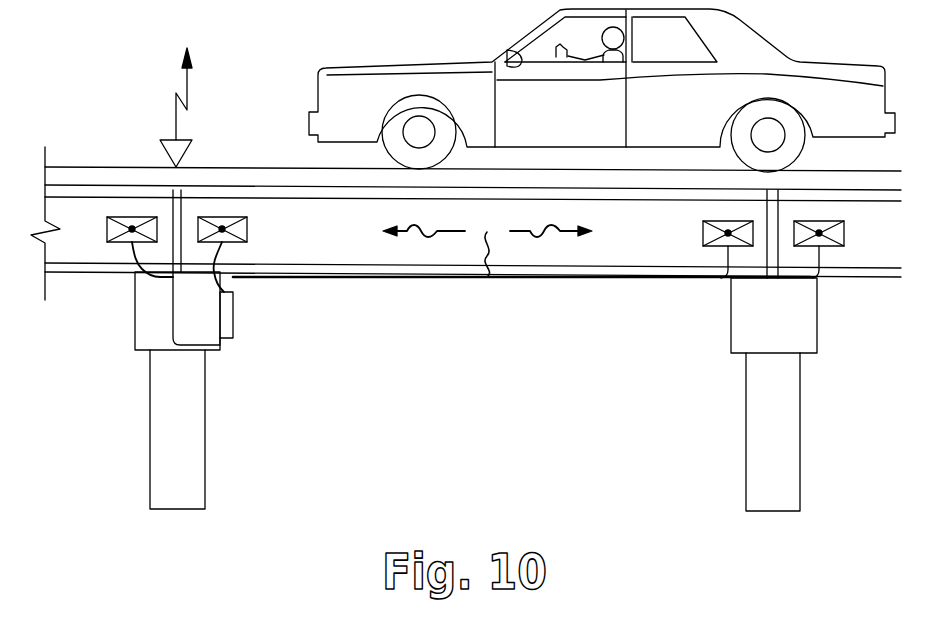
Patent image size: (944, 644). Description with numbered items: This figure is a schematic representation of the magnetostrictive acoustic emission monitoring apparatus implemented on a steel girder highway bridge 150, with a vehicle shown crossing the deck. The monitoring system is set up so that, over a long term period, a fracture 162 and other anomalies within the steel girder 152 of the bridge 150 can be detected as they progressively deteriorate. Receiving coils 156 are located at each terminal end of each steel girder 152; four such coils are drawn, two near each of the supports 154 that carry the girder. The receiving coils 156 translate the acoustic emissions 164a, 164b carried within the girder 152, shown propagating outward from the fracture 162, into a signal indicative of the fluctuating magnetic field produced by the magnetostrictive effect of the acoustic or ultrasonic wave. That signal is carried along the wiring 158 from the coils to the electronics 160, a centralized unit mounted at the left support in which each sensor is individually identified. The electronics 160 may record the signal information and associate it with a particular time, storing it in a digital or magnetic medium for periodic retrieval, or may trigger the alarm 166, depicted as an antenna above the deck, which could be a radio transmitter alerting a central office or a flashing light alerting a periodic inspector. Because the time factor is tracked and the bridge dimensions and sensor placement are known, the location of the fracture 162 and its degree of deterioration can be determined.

The bridge 150 is at (466, 279).
The steel girder 152 is at (638, 250).
The pier support 154 is at (188, 440).
The receiving coil 156 is at (248, 229).
The sensor wiring 158 is at (132, 253).
The electronics 160 is at (244, 325).
The fracture 162 is at (485, 255).
The acoustic emission 164a is at (415, 237).
The acoustic emission 164b is at (557, 237).
The alarm 166 is at (163, 157).